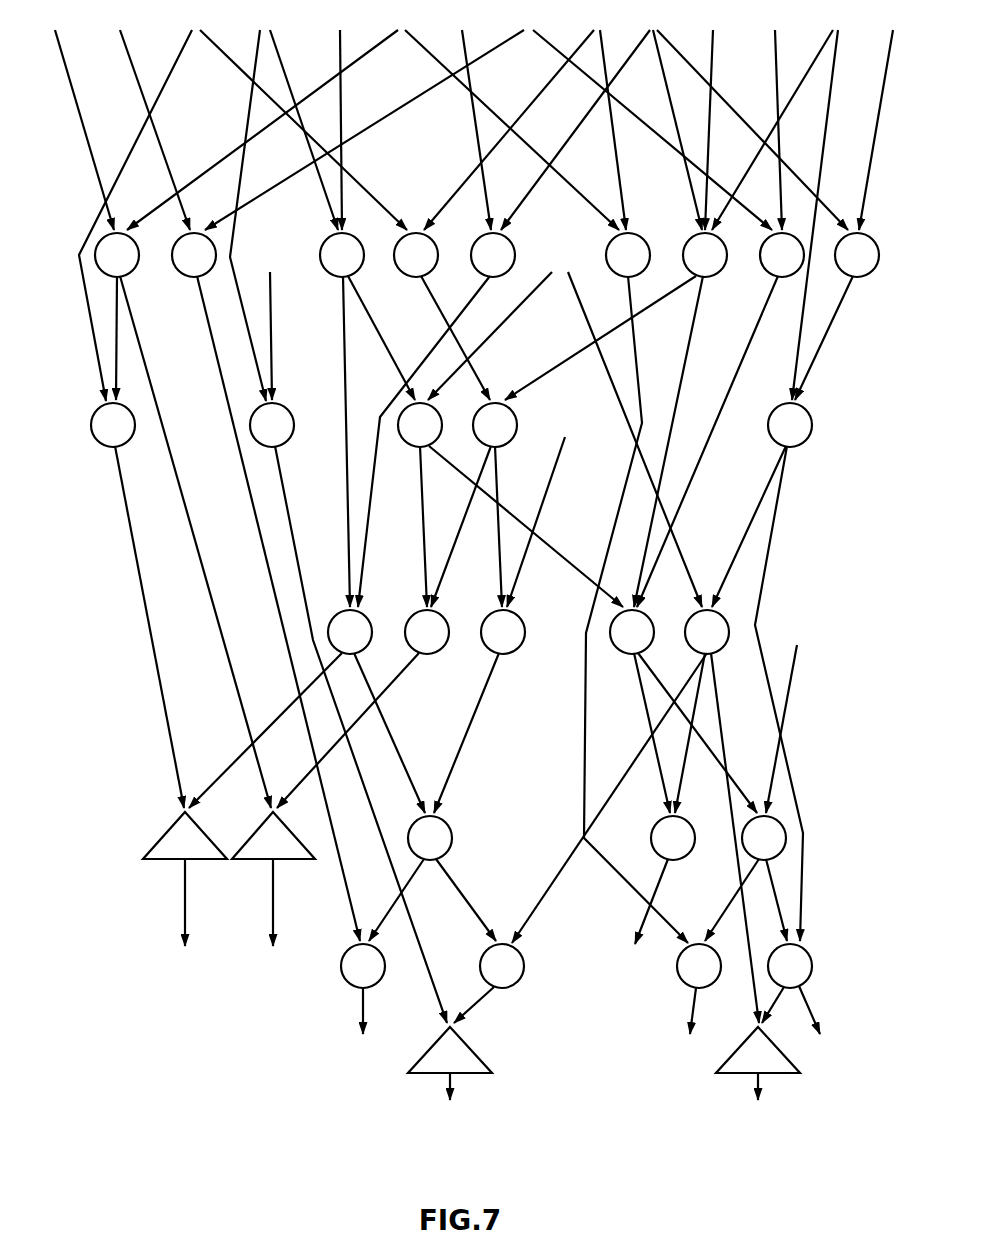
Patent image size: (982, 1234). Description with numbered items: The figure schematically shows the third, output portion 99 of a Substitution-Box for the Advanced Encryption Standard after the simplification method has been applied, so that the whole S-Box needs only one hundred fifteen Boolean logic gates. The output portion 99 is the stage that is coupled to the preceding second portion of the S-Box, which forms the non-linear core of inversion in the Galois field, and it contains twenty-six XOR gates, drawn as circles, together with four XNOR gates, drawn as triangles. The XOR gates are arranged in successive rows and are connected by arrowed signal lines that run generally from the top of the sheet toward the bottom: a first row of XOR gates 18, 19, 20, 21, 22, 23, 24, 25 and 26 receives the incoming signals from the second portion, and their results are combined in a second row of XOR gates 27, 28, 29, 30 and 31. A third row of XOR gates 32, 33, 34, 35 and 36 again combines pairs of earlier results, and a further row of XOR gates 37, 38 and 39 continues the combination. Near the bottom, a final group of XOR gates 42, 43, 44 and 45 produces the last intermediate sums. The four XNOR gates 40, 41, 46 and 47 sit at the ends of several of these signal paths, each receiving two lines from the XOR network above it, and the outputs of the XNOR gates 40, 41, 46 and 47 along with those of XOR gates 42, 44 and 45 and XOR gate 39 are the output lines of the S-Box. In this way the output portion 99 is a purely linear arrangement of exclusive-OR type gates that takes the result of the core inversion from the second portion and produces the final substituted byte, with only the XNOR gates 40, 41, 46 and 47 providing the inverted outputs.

The switching node 18 is at (342, 255).
The switching node 19 is at (194, 255).
The switching node 20 is at (117, 255).
The switching node 21 is at (782, 255).
The switching node 22 is at (416, 255).
The switching node 23 is at (628, 255).
The switching node 24 is at (493, 255).
The switching node 25 is at (705, 255).
The switching node 26 is at (857, 255).
The switching node 27 is at (272, 425).
The switching node 28 is at (113, 425).
The switching node 29 is at (495, 425).
The switching node 30 is at (420, 425).
The switching node 31 is at (790, 425).
The switching node 32 is at (427, 632).
The switching node 33 is at (503, 632).
The switching node 34 is at (350, 632).
The switching node 35 is at (632, 632).
The switching node 36 is at (707, 632).
The switching node 37 is at (430, 838).
The switching node 38 is at (764, 838).
The switching node 39 is at (673, 838).
The output node 40 is at (185, 835).
The output node 41 is at (273, 835).
The switching node 42 is at (502, 966).
The switching node 43 is at (790, 966).
The switching node 44 is at (699, 966).
The switching node 45 is at (363, 966).
The output node 46 is at (758, 1050).
The output node 47 is at (450, 1050).
The third, output portion 99 is at (140, 943).